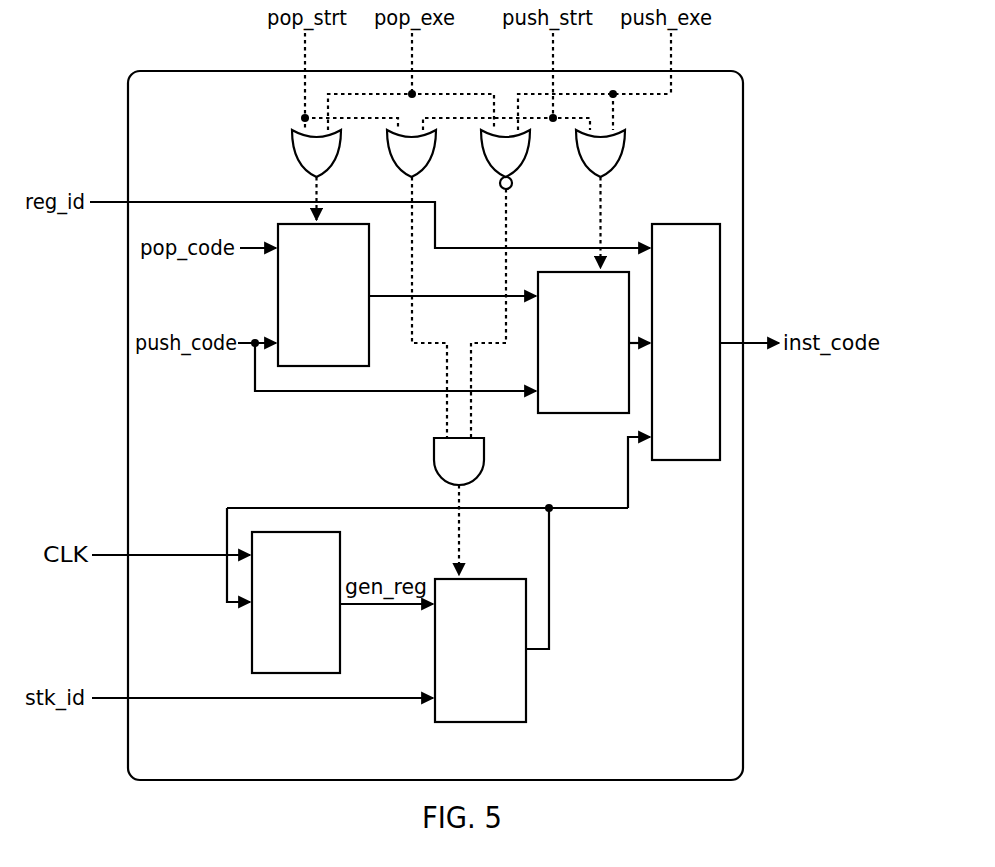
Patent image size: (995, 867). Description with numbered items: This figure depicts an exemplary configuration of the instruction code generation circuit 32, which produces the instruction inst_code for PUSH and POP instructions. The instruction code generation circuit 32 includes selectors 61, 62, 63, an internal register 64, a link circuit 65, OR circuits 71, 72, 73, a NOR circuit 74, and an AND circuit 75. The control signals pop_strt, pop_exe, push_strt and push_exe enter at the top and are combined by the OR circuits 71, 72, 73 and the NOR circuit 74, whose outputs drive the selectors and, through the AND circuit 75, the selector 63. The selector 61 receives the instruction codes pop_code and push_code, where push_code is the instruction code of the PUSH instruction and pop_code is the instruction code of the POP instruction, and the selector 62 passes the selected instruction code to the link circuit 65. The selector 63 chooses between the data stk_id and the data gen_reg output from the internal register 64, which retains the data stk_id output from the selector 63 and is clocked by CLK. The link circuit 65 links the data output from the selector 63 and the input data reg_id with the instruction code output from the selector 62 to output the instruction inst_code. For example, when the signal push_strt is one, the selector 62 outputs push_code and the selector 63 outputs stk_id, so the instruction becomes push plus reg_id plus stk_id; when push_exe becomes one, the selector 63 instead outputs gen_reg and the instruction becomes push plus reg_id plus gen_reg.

The instruction code generation circuit 32 is at (743, 142).
The selector 61 is at (370, 258).
The selector 62 is at (536, 352).
The selector 63 is at (434, 653).
The internal register 64 is at (251, 650).
The link circuit 65 is at (695, 224).
The OR circuit 71 is at (330, 171).
The OR circuit 72 is at (425, 171).
The OR circuit 73 is at (614, 171).
The NOR circuit 74 is at (519, 171).
The AND circuit 75 is at (485, 461).